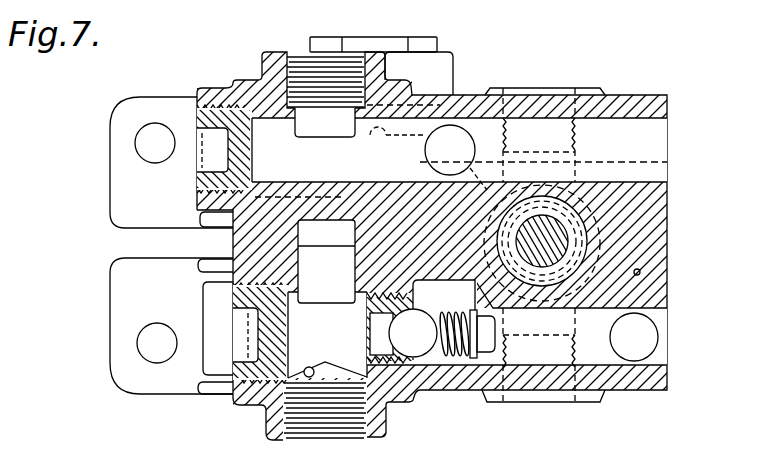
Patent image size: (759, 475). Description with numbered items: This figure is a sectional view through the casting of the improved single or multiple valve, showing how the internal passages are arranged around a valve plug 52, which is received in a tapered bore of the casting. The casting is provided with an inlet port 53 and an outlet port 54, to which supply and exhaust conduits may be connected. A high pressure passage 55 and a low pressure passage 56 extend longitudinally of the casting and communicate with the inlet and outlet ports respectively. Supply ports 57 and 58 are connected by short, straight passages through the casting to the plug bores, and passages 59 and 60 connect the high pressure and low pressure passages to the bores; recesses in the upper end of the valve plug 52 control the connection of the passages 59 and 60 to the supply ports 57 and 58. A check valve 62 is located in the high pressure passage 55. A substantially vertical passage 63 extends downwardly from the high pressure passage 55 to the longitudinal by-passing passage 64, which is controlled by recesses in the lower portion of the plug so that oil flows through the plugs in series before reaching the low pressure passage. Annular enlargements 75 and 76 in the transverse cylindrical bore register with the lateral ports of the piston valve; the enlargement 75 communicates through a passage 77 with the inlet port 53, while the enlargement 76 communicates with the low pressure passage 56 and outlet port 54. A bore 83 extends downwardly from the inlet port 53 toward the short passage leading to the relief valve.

The valve plug 52 is at (580, 214).
The inlet port 53 is at (312, 425).
The outlet port 54 is at (301, 55).
The high pressure passage 55 is at (660, 358).
The low pressure passage 56 is at (643, 127).
The supply port 57 is at (558, 395).
The supply port 58 is at (537, 82).
The passage 59 is at (660, 320).
The passage 60 is at (428, 160).
The check valve 62 is at (418, 343).
The vertical passage 63 is at (473, 295).
The by-passing passage 64 is at (655, 190).
The annular enlargement 75 is at (353, 233).
The annular enlargement 76 is at (376, 136).
The passage 77 is at (306, 278).
The bore 83 is at (309, 366).